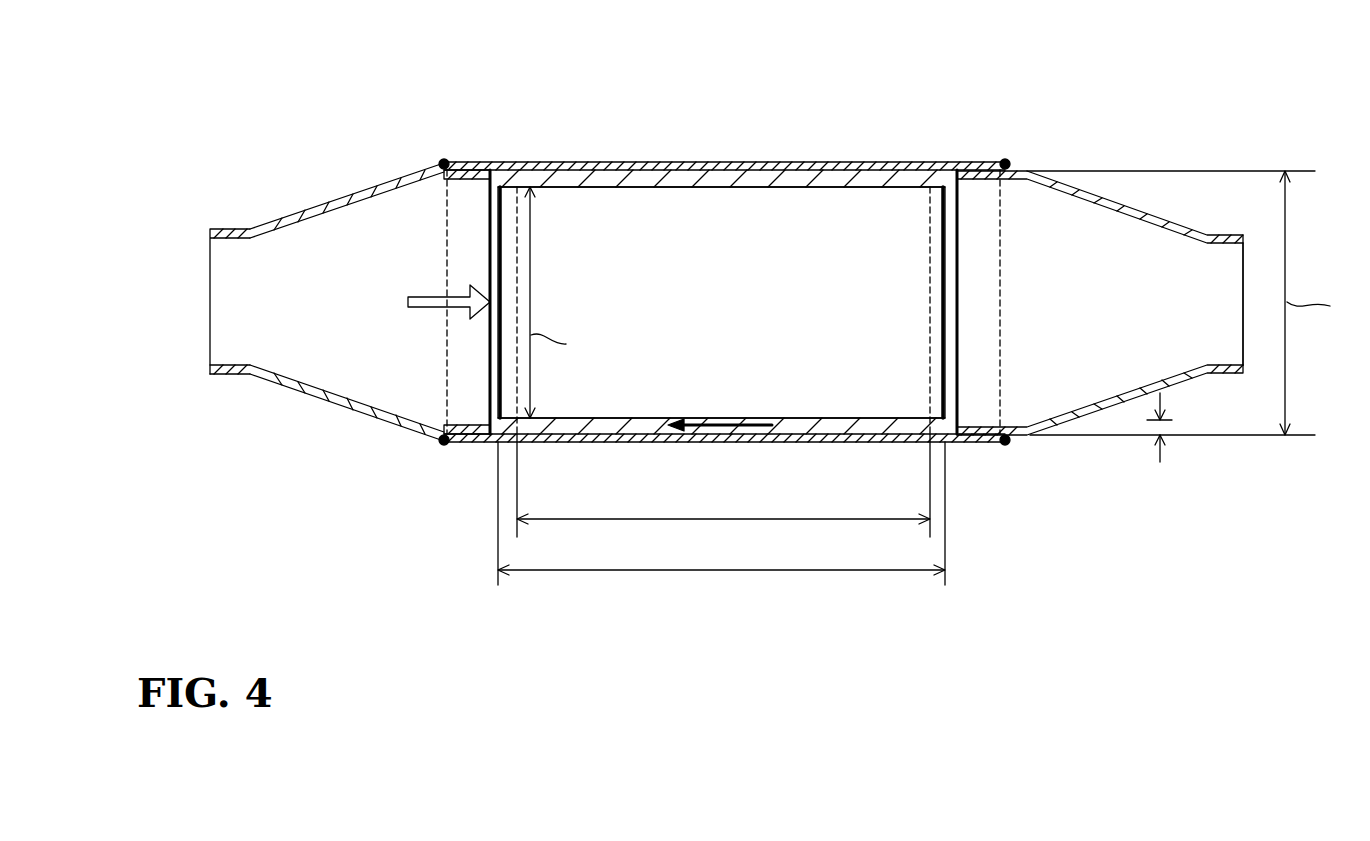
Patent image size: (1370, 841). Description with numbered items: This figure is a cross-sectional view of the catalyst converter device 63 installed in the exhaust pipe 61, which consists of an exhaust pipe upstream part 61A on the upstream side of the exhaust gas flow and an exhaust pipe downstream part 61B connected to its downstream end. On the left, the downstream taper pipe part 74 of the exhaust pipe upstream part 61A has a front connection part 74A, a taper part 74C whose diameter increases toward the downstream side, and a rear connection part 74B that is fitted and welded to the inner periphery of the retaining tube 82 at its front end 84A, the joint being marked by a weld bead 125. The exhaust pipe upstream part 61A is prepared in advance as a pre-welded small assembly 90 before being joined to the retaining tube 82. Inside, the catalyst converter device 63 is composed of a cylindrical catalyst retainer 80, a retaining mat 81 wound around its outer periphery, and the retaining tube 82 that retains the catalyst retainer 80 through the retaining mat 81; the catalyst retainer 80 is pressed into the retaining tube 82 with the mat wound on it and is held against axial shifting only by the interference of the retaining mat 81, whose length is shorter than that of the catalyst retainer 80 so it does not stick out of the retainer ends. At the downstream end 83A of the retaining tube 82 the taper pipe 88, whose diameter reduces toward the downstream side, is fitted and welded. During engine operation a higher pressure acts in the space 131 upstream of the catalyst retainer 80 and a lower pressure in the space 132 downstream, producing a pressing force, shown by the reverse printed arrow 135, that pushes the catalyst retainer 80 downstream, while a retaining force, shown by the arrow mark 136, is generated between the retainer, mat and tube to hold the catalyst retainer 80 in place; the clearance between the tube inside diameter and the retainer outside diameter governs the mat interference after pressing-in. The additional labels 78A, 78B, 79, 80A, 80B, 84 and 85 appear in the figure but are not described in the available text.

The exhaust pipe 61 is at (198, 222).
The exhaust pipe upstream part 61A is at (303, 190).
The exhaust pipe downstream part 61B is at (665, 140).
The catalyst converter device 63 is at (592, 160).
The downstream taper pipe part 74 is at (330, 196).
The front connection part 74A is at (215, 240).
The rear connection part 74B is at (456, 175).
The taper part 74C is at (369, 192).
The upper cone wall 78A is at (273, 250).
The lower cone wall 78B is at (290, 357).
The lower flange portion 79 is at (463, 424).
The catalyst retainer 80 is at (878, 205).
The catalyst upstream end face 80A is at (503, 215).
The catalyst downstream end face 80B is at (956, 200).
The retaining mat 81 is at (812, 180).
The retaining tube 82 is at (750, 160).
The downstream end 83A is at (985, 172).
The weld portion 84 is at (452, 442).
The front end 84A is at (485, 443).
The upstream end plate 85 is at (490, 255).
The taper pipe 88 is at (1090, 190).
The small assembly 90 is at (243, 383).
The weld bead 125 is at (444, 164).
The space on the upstream side 131 is at (290, 308).
The space on the downstream side 132 is at (1100, 252).
The reverse printed arrow 135 is at (420, 308).
The arrow mark 136 is at (757, 432).